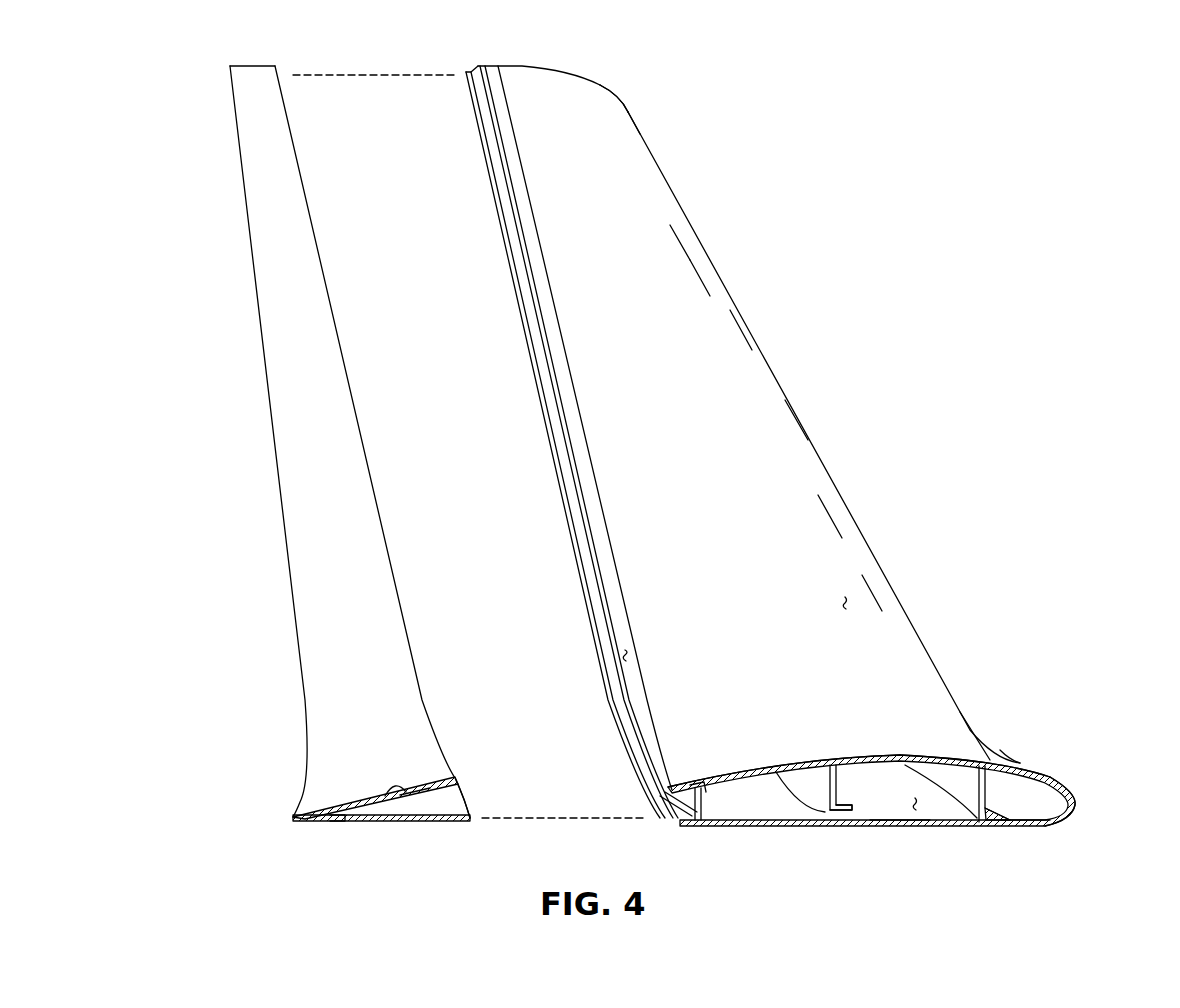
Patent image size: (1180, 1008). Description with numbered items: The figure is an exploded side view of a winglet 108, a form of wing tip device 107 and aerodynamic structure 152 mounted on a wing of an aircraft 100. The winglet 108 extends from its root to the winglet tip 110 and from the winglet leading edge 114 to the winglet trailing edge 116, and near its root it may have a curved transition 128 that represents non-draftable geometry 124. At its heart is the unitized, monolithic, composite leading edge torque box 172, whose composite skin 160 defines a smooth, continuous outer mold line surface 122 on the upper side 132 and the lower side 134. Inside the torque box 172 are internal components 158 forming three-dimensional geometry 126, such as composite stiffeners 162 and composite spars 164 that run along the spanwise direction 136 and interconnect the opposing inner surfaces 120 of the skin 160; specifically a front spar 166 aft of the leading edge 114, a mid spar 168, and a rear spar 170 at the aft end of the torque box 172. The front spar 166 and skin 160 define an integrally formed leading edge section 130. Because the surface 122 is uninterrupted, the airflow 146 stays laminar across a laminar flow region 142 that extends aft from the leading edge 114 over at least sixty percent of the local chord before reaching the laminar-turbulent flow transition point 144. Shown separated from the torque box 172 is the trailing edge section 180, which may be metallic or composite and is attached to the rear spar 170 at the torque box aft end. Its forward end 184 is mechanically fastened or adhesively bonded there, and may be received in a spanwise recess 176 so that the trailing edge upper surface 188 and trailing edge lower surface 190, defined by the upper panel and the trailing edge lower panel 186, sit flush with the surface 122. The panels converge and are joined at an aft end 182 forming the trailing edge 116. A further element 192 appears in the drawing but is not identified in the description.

The aircraft 100 is at (650, 166).
The wing tip device 107 is at (583, 79).
The winglet 108 is at (610, 89).
The winglet tip 110 is at (557, 67).
The winglet leading edge 114 is at (1080, 801).
The winglet trailing edge 116 is at (292, 818).
The inner surfaces 120 is at (918, 803).
The outer mold line surface 122 is at (828, 512).
The non-draftable geometry 124 is at (1010, 752).
The three-dimensional geometry 126 is at (776, 772).
The curved transition 128 is at (978, 722).
The leading edge section 130 is at (795, 418).
The upper side 132 is at (678, 241).
The lower side 134 is at (700, 282).
The spanwise direction 136 is at (740, 327).
The laminar flow region 142 is at (855, 597).
The laminar-turbulent flow transition point 144 is at (618, 582).
The airflow 146 is at (636, 121).
The aerodynamic structure 152 is at (524, 64).
The internal components 158 is at (816, 800).
The composite skin 160 is at (895, 823).
The composite stiffeners 162 is at (686, 822).
The composite spars 164 is at (935, 757).
The front spar 166 is at (1010, 823).
The mid spar 168 is at (858, 790).
The rear spar 170 is at (722, 808).
The leading edge torque box 172 is at (883, 757).
The recess 176 is at (620, 652).
The trailing edge section 180 is at (297, 622).
The aft end 182 is at (283, 508).
The forward end 184 is at (468, 822).
The trailing edge lower panel 186 is at (412, 795).
The trailing edge upper surface 188 is at (335, 822).
The trailing edge lower surface 190 is at (355, 780).
The fastener 192 is at (367, 822).